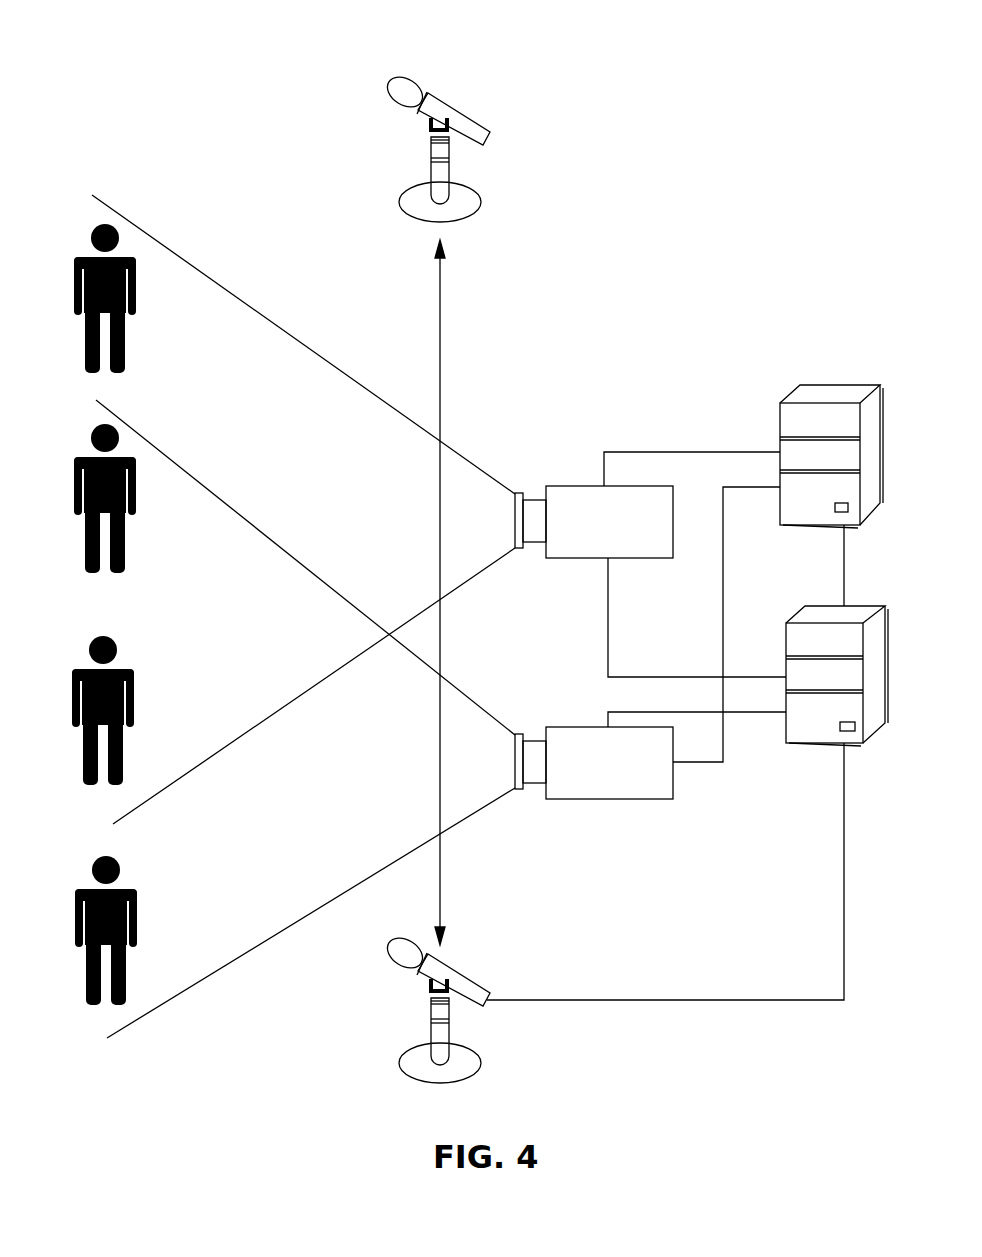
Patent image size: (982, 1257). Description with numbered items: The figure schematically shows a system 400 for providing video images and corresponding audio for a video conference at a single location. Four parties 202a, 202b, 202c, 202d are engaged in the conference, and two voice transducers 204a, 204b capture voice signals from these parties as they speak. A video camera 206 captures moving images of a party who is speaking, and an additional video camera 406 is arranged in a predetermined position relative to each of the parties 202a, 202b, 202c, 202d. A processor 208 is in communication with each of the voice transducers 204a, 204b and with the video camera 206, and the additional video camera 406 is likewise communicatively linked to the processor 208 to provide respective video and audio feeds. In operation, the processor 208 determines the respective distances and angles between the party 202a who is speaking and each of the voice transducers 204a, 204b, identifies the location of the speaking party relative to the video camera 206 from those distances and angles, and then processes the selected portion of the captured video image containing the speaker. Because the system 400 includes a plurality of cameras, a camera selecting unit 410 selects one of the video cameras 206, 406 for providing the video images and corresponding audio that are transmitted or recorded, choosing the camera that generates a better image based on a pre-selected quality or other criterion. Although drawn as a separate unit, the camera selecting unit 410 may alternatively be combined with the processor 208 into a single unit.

The system 400 is at (755, 31).
The party 202a is at (137, 308).
The party 202b is at (137, 508).
The party 202c is at (135, 672).
The party 202d is at (138, 890).
The voice transducer 204a is at (478, 200).
The voice transducer 204b is at (480, 1053).
The video camera 206 is at (635, 558).
The additional video camera 406 is at (635, 799).
The camera selecting unit 410 is at (780, 433).
The processor 208 is at (786, 647).